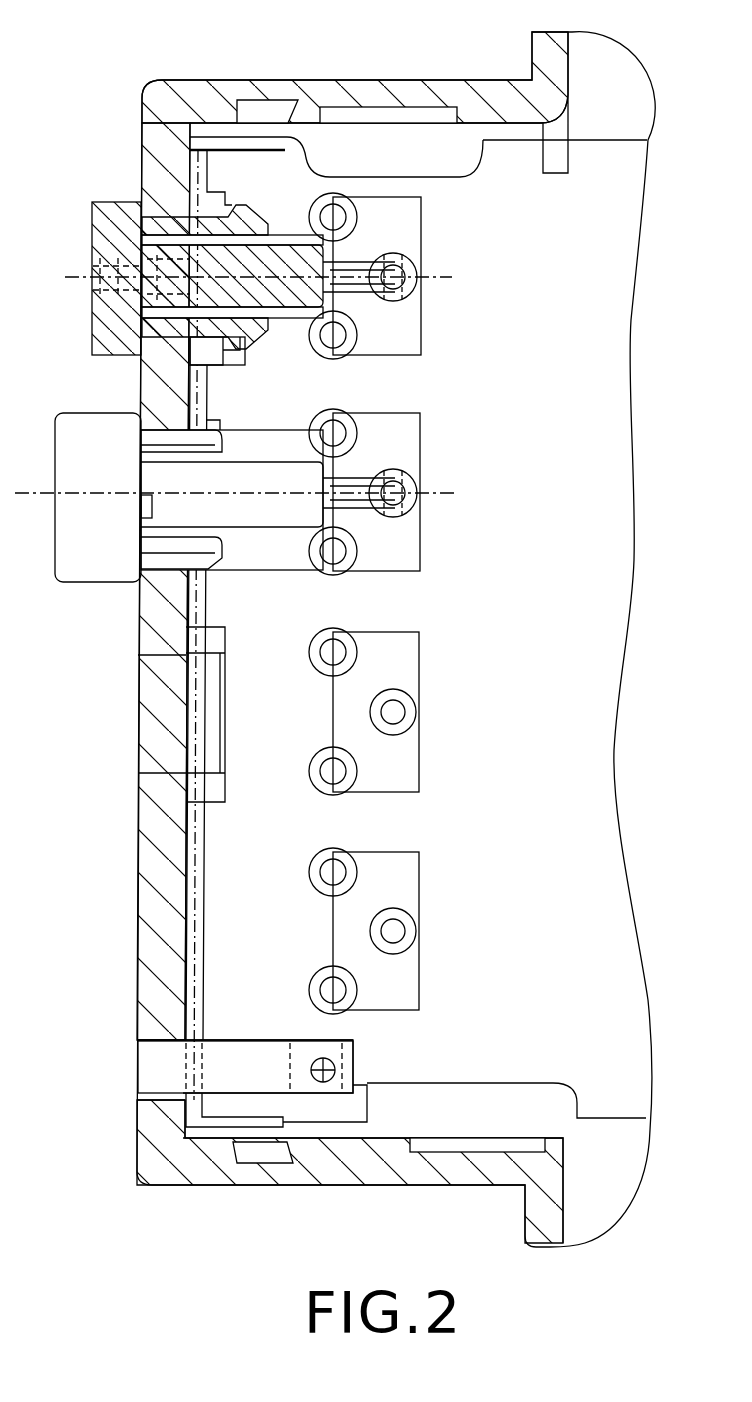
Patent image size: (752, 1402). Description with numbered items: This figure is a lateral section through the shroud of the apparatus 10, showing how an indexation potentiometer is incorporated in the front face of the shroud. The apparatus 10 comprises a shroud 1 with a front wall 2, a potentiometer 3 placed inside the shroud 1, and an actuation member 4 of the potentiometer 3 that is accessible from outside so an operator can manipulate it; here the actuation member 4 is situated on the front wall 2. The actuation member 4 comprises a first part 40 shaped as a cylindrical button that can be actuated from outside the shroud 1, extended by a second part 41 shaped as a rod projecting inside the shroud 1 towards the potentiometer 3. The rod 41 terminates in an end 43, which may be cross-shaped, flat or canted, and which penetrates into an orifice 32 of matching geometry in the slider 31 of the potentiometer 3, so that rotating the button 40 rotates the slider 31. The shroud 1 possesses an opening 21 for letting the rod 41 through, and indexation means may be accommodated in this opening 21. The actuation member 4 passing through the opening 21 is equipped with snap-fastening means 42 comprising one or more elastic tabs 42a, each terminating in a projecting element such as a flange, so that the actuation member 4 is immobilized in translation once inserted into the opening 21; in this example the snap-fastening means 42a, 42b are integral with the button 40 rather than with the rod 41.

The shroud 1 is at (352, 1173).
The front wall 2 is at (150, 965).
The potentiometer 3 is at (403, 343).
The actuation member 4 is at (265, 279).
The apparatus 10 is at (427, 52).
The opening 21 is at (208, 388).
The slider 31 is at (420, 284).
The orifice 32 is at (405, 302).
The first part 40 is at (92, 317).
The second part 41 is at (278, 300).
The snap-fastening means 42 is at (230, 279).
The elastic tab 42a is at (265, 234).
The snap-fastening means 42b is at (245, 347).
The end 43 is at (412, 262).